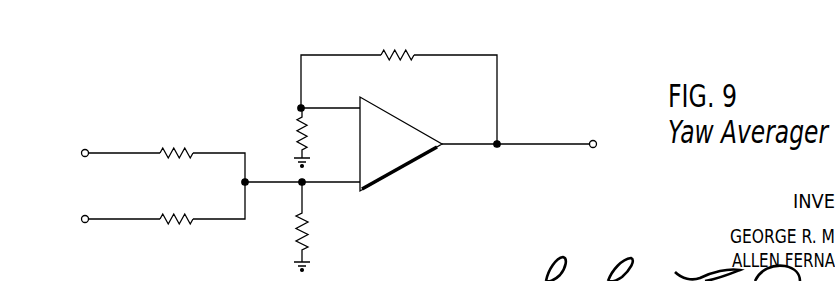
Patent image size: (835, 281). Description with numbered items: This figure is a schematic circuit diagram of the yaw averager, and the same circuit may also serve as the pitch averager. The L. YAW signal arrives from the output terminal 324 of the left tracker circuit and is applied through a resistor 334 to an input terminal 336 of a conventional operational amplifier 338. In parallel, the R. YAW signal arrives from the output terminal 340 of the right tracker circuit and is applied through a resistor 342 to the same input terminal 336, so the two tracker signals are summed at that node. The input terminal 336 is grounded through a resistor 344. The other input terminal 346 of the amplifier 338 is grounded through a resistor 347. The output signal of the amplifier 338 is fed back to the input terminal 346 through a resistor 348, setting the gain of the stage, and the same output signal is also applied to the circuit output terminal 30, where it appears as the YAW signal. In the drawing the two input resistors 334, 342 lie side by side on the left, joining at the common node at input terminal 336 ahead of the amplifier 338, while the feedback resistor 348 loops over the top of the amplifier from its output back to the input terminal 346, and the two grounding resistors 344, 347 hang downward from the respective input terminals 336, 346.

The circuit output terminal 30 is at (590, 147).
The output terminal of the left tracker circuit 324 is at (87, 157).
The resistor 334 is at (183, 148).
The input terminal 336 is at (305, 184).
The operational amplifier 338 is at (393, 172).
The output terminal of the right tracker circuit 340 is at (88, 223).
The resistor 342 is at (178, 195).
The resistor 344 is at (297, 236).
The other input terminal 346 is at (300, 107).
The resistor 347 is at (297, 124).
The resistor 348 is at (409, 48).